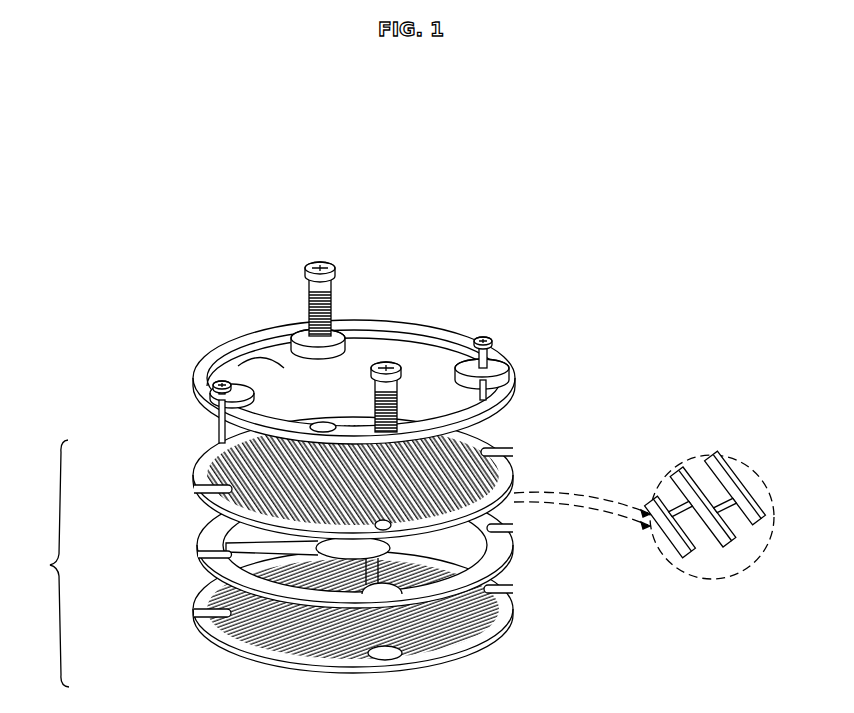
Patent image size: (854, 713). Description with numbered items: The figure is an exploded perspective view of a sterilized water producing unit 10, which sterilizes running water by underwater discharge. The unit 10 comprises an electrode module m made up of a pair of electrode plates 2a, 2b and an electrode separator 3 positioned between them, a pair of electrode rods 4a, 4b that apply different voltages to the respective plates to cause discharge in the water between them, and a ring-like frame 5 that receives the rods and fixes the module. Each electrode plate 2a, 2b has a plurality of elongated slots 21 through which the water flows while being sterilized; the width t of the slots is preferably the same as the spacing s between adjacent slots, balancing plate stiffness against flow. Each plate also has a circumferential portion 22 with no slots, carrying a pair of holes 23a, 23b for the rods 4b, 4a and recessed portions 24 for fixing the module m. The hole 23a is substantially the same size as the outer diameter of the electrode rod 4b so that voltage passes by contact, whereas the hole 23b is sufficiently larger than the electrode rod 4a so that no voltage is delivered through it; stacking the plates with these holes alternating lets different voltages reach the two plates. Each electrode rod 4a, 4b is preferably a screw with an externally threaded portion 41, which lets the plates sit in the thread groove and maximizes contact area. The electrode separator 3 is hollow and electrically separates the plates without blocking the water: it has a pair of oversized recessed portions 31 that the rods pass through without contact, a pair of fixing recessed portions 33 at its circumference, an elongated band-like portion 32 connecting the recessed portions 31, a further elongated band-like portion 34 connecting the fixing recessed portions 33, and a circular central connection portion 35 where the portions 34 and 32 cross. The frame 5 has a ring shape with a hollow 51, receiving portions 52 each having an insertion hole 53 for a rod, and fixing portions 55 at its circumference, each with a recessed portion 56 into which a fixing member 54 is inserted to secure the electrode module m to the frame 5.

The sterilized water producing unit 10 is at (587, 211).
The electrode plate 2a is at (193, 463).
The electrode plate 2b is at (217, 637).
The electrode separator 3 is at (193, 547).
The ring-like frame 5 is at (512, 389).
The electrode rod 4a is at (330, 264).
The electrode rod 4b is at (391, 362).
The externally threaded portion 41 is at (308, 297).
The hollow 51 is at (212, 382).
The receiving portion 52 is at (290, 349).
The insertion hole 53 is at (306, 330).
The fixing member 54 is at (488, 336).
The fixing portion 55 is at (453, 338).
The recessed portion 56 is at (498, 364).
The hole 23a is at (393, 537).
The hole 23b is at (327, 424).
The recessed portion 24 is at (503, 593).
The recessed portion 31 is at (413, 600).
The elongated band-like portion 32 is at (503, 583).
The fixing recessed portion 33 is at (513, 526).
The elongated band-like portion 34 is at (392, 527).
The circular central connection portion 35 is at (407, 560).
The electrode module m is at (48, 563).
The spacing between adjacent slots s is at (686, 472).
The width of the slots t is at (757, 527).
The elongated slot 21 is at (727, 492).
The circumferential portion 22 is at (722, 566).